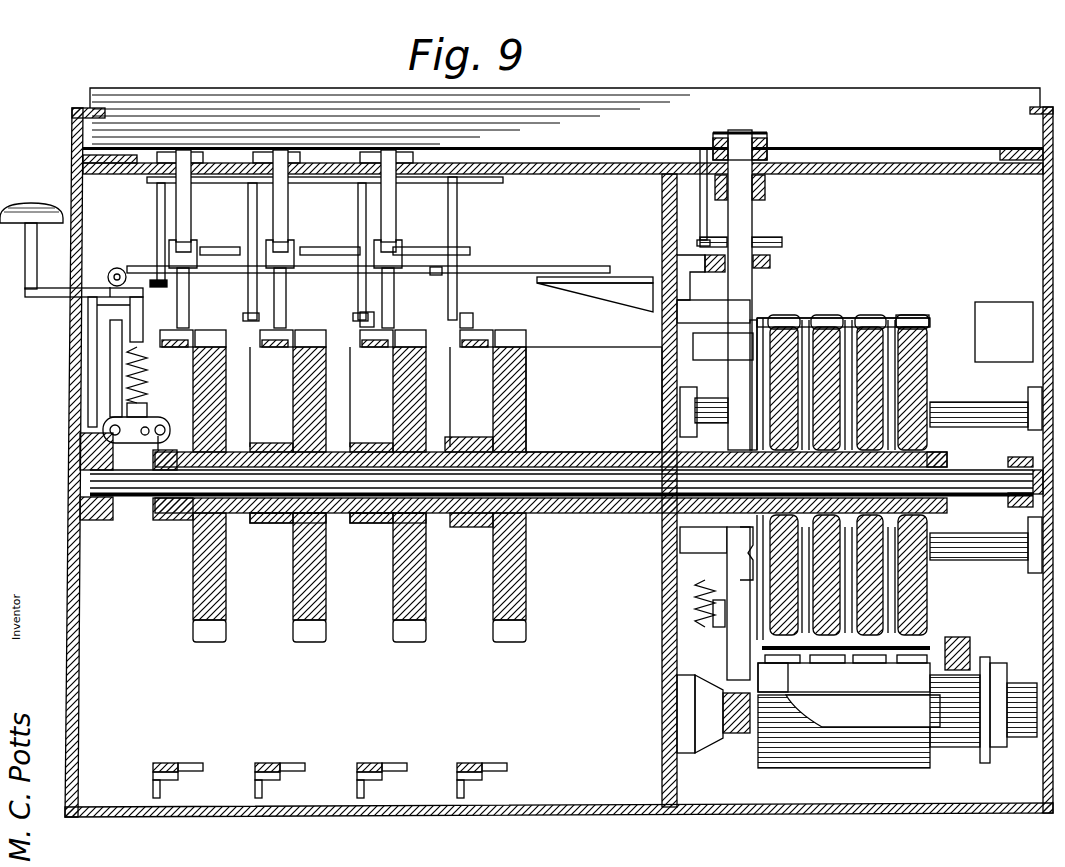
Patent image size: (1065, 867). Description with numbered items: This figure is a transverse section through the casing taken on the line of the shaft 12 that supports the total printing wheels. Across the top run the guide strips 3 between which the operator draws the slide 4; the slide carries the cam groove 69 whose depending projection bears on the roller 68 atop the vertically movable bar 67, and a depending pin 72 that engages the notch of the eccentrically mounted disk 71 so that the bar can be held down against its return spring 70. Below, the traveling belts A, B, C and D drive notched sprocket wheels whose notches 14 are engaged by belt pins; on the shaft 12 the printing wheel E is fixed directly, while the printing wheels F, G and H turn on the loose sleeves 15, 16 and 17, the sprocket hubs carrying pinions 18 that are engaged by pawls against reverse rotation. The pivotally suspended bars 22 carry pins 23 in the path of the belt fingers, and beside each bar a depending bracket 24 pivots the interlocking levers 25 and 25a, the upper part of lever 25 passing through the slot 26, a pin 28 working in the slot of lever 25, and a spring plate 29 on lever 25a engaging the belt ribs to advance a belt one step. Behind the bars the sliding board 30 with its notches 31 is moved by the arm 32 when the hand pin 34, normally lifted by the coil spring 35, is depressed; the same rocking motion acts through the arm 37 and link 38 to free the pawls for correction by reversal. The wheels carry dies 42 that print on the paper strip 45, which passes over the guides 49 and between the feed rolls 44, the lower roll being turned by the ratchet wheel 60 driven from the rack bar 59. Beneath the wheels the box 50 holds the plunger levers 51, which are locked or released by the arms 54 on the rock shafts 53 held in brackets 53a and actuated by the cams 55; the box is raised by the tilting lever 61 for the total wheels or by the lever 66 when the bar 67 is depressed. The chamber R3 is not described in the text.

The guide strips 3 is at (70, 127).
The slide 4 is at (563, 118).
The shaft 12 is at (125, 518).
The notches 14 is at (312, 328).
The sleeve 15 is at (280, 525).
The sleeve 16 is at (380, 528).
The sleeve 17 is at (582, 515).
The pinions 18 is at (178, 522).
The bars 22 is at (240, 280).
The pins 23 is at (470, 315).
The depending bracket 24 is at (157, 198).
The interlocking lever 25 is at (192, 204).
The interlocking lever 25a is at (167, 300).
The slot 26 is at (415, 162).
The pin 28 is at (222, 235).
The spring plate 29 is at (375, 320).
The board 30 is at (143, 268).
The notches 31 is at (433, 275).
The arm 32 is at (110, 328).
The pin 34 is at (45, 300).
The coil spring 35 is at (148, 390).
The arm 37 is at (120, 443).
The link 38 is at (172, 422).
The dies 42 is at (880, 330).
The feed rolls 44 is at (842, 768).
The paper strip 45 is at (905, 652).
The guides 49 is at (905, 640).
The box 50 is at (844, 677).
The levers 51 is at (805, 660).
The rock shafts 53 is at (840, 318).
The brackets 53a is at (1022, 282).
The arms 54 is at (905, 318).
The cams 55 is at (930, 437).
The rack bar 59 is at (975, 648).
The ratchet wheel 60 is at (965, 740).
The tilting lever 61 is at (863, 711).
The lever 66 is at (735, 735).
The vertically movable bar 67 is at (752, 225).
The roller 68 is at (768, 135).
The cam groove 69 is at (716, 133).
The spring 70 is at (700, 628).
The eccentrically mounted disk 71 is at (785, 243).
The depending pin 72 is at (662, 200).
The traveling belt A is at (163, 390).
The traveling belt B is at (250, 385).
The traveling belt C is at (363, 385).
The traveling belt D is at (436, 366).
The printing wheel E is at (930, 368).
The printing wheel F is at (873, 315).
The printing wheel G is at (828, 315).
The printing wheel H is at (783, 315).
The chamber R3 is at (594, 399).